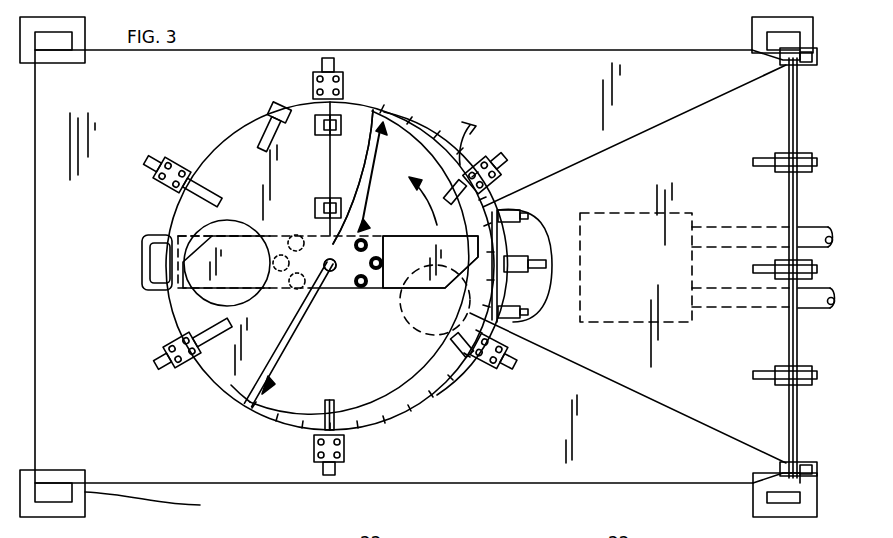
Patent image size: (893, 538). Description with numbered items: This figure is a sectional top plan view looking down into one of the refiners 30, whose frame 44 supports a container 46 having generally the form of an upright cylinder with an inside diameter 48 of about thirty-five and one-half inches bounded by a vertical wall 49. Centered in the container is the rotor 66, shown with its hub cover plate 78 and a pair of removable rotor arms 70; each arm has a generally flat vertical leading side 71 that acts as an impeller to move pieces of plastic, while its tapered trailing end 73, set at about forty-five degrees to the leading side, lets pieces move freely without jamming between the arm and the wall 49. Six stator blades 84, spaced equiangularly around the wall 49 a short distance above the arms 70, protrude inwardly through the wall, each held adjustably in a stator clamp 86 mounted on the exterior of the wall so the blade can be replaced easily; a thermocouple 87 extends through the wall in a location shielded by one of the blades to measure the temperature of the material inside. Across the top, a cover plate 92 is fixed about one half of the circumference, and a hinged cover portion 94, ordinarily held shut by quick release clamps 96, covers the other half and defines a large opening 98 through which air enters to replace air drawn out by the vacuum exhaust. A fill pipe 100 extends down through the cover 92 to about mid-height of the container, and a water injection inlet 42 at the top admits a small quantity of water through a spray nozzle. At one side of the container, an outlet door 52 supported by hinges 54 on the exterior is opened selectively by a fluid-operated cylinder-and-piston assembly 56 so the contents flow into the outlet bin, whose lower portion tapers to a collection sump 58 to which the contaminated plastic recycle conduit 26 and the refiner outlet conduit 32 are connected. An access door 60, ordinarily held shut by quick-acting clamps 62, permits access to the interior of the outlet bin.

The refiner 30 is at (450, 48).
The frame 44 is at (157, 504).
The access door 60 is at (799, 130).
The quick-acting clamps 62 is at (772, 155).
The refiner outlet conduit 32 is at (813, 227).
The contaminated plastic recycle conduit 26 is at (813, 308).
The collection sump 58 is at (650, 213).
The inside diameter 48 is at (308, 322).
The vertical wall 49 is at (437, 398).
The container 46 is at (250, 402).
The cover plate 92 is at (353, 177).
The hub cover plate 78 is at (333, 272).
The water injection inlet 42 is at (336, 273).
The rotor 66 is at (328, 205).
The large opening 98 is at (240, 232).
The leading side 71 is at (443, 237).
The rotor arm 70 is at (414, 252).
The trailing end 73 is at (198, 242).
The fill pipe 100 is at (410, 335).
The hinged cover portion 94 is at (297, 169).
The stator clamp 86 is at (345, 82).
The quick release clamps 96 is at (205, 165).
The stator blade 84 is at (334, 412).
The thermocouple 87 is at (443, 158).
The fluid-operated cylinder-and-piston assembly 56 is at (560, 198).
The hinges 54 is at (512, 210).
The outlet door 52 is at (528, 258).